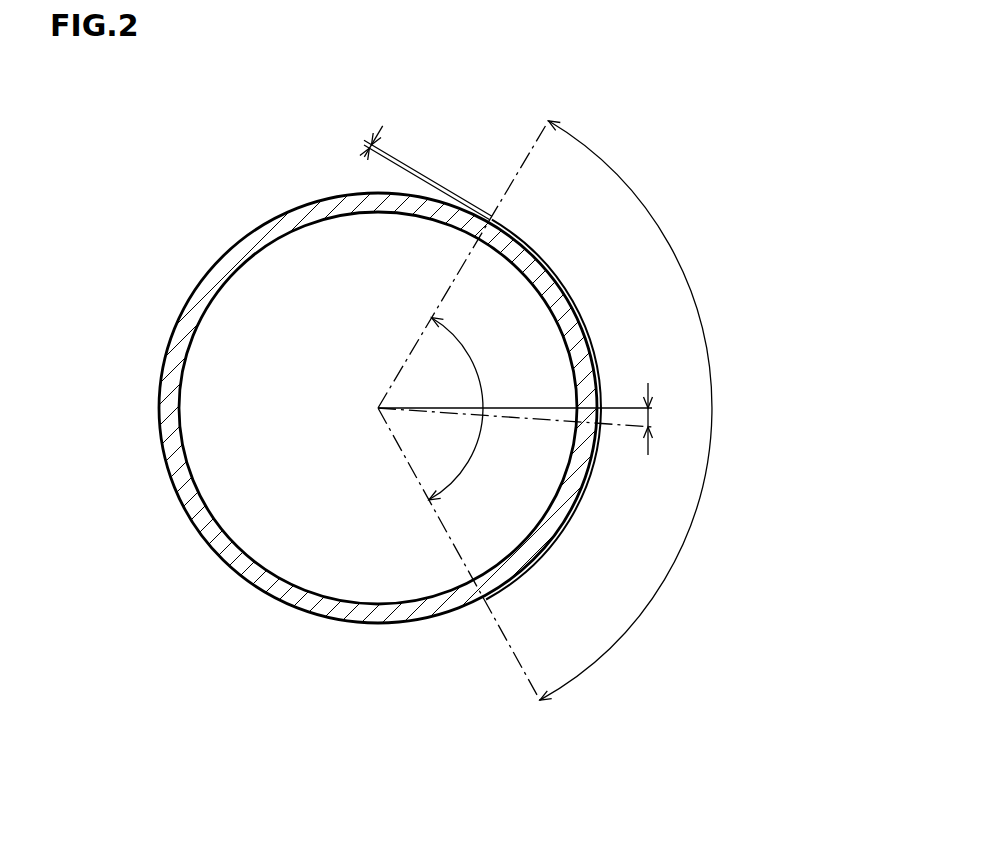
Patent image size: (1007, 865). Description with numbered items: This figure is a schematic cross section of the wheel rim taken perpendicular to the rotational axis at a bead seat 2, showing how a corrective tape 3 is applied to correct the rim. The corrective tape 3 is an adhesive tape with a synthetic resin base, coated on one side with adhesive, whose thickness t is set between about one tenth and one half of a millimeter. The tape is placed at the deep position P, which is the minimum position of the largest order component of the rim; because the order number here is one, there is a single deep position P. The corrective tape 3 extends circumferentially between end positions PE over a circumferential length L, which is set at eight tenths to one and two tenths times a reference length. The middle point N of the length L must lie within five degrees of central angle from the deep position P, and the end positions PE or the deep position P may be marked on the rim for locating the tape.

The bead seat 2 is at (298, 210).
The corrective tape 3 is at (573, 293).
The end positions PE is at (492, 213).
The middle point N is at (601, 408).
The deep position P is at (603, 432).
The circumferential length L is at (712, 412).
The thickness t is at (365, 144).